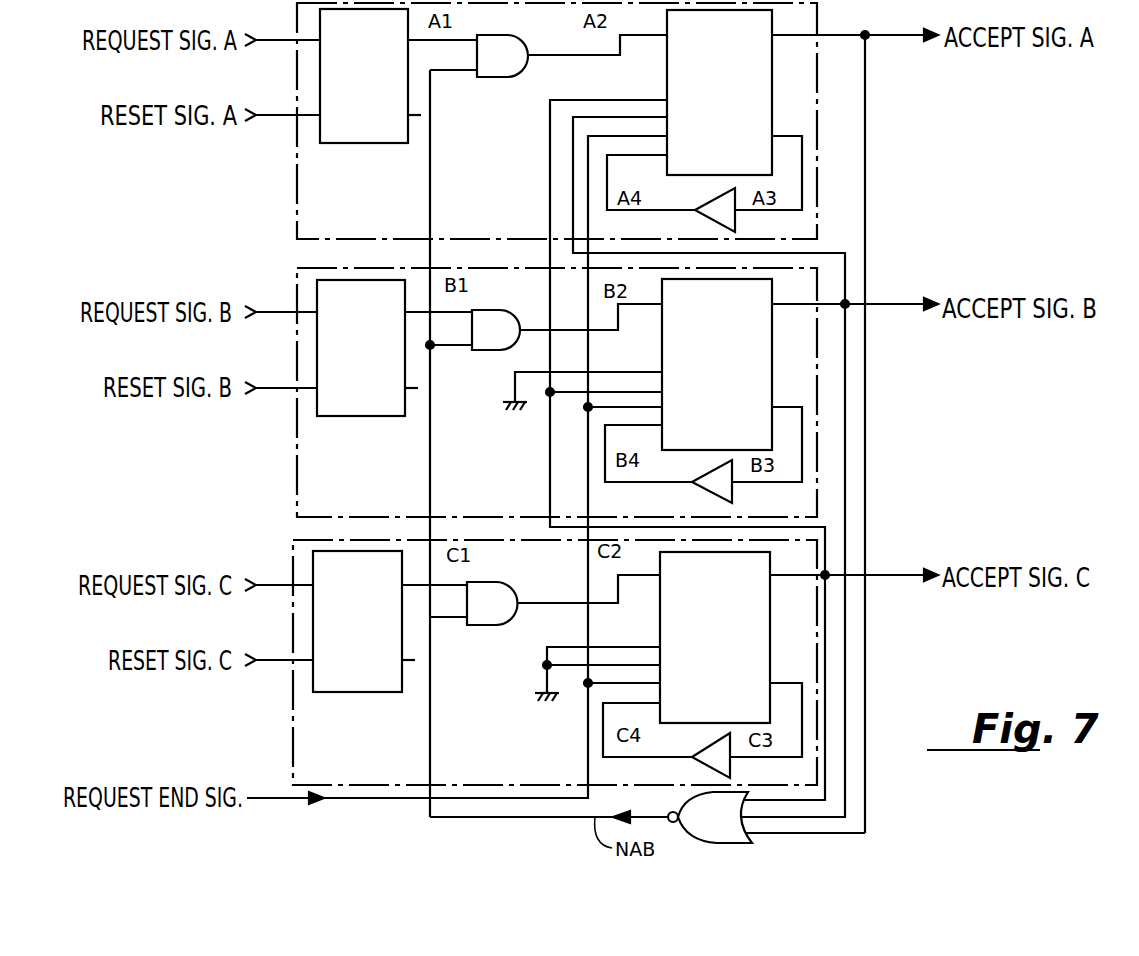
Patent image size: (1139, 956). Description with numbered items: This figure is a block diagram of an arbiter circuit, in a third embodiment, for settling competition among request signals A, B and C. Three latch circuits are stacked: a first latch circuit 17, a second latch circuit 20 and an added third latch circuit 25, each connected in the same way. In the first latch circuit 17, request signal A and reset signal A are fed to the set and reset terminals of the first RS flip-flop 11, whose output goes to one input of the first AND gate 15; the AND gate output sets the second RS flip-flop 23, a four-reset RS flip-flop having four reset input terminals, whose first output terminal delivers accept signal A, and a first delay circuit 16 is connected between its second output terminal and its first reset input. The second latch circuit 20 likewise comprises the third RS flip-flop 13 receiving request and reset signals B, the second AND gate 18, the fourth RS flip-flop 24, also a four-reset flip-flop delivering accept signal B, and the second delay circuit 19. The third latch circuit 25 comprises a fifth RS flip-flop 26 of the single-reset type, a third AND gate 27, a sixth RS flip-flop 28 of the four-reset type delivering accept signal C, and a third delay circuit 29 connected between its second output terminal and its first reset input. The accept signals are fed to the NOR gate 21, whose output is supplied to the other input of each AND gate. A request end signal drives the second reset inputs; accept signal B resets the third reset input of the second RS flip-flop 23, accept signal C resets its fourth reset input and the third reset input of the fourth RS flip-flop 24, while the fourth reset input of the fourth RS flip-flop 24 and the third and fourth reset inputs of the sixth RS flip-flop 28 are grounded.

The first RS flip-flop 11 is at (358, 143).
The third RS flip-flop 13 is at (355, 400).
The first AND gate 15 is at (512, 47).
The first delay circuit 16 is at (706, 203).
The first latch circuit 17 is at (817, 105).
The second AND gate 18 is at (487, 345).
The second delay circuit 19 is at (706, 477).
The second latch circuit 20 is at (293, 445).
The NOR gate 21 is at (692, 804).
The second RS flip-flop 23 is at (750, 82).
The fourth RS flip-flop 24 is at (752, 373).
The third latch circuit 25 is at (293, 737).
The fifth RS flip-flop 26 is at (352, 677).
The third AND gate 27 is at (495, 612).
The sixth RS flip-flop 28 is at (755, 642).
The third delay circuit 29 is at (706, 753).